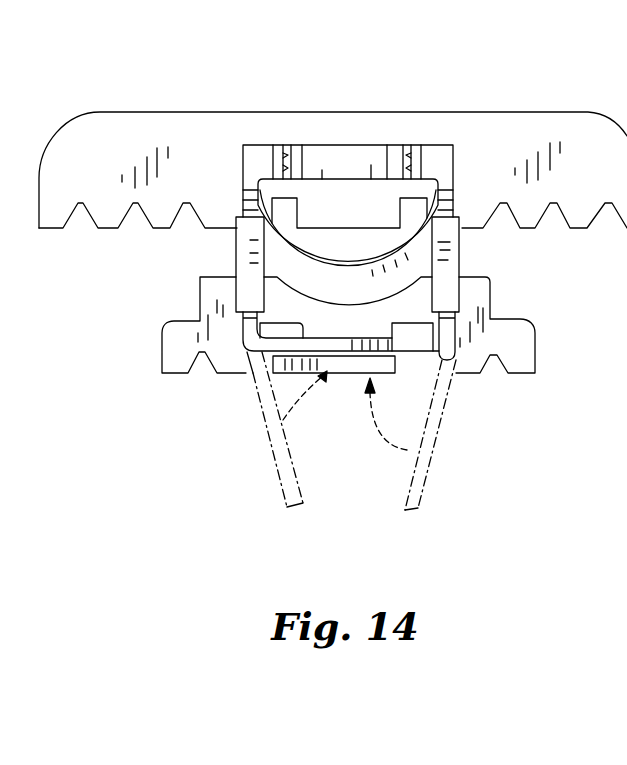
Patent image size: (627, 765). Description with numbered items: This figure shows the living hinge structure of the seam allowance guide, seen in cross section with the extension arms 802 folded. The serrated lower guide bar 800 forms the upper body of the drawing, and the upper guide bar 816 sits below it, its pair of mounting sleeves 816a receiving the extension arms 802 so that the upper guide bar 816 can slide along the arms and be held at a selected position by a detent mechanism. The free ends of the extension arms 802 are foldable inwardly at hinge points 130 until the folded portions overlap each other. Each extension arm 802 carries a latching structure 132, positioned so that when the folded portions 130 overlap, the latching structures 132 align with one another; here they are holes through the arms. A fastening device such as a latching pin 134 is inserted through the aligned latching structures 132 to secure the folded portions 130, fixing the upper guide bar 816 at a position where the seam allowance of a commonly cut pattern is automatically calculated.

The lower guide bar 800 is at (525, 127).
The mounting sleeves 816a is at (250, 243).
The upper guide bar 816 is at (178, 352).
The hinge points 130 is at (452, 358).
The latching structure 132 is at (398, 345).
The latching pin 134 is at (398, 368).
The extension arms 802 is at (285, 468).